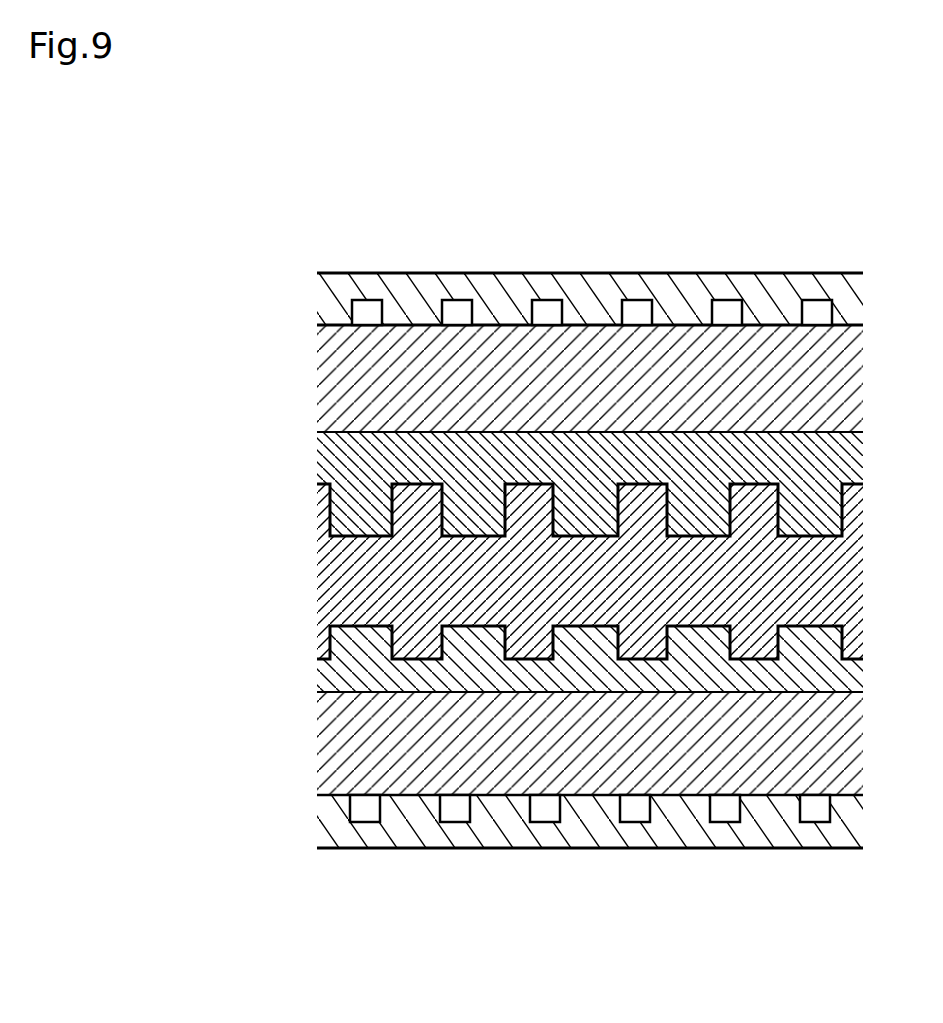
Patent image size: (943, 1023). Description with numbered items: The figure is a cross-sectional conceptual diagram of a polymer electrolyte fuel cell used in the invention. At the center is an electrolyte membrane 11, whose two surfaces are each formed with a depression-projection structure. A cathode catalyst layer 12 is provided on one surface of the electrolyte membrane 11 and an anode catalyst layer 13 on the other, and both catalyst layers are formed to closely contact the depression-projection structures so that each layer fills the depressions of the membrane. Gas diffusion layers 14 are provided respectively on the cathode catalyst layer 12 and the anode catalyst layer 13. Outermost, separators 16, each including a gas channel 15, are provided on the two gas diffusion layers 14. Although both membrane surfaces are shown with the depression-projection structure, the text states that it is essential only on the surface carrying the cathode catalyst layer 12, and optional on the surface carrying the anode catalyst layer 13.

The electrolyte membrane 11 is at (333, 575).
The cathode catalyst layer 12 is at (333, 457).
The anode catalyst layer 13 is at (333, 669).
The gas diffusion layer 14 is at (333, 380).
The gas channel 15 is at (365, 315).
The separator 16 is at (333, 300).